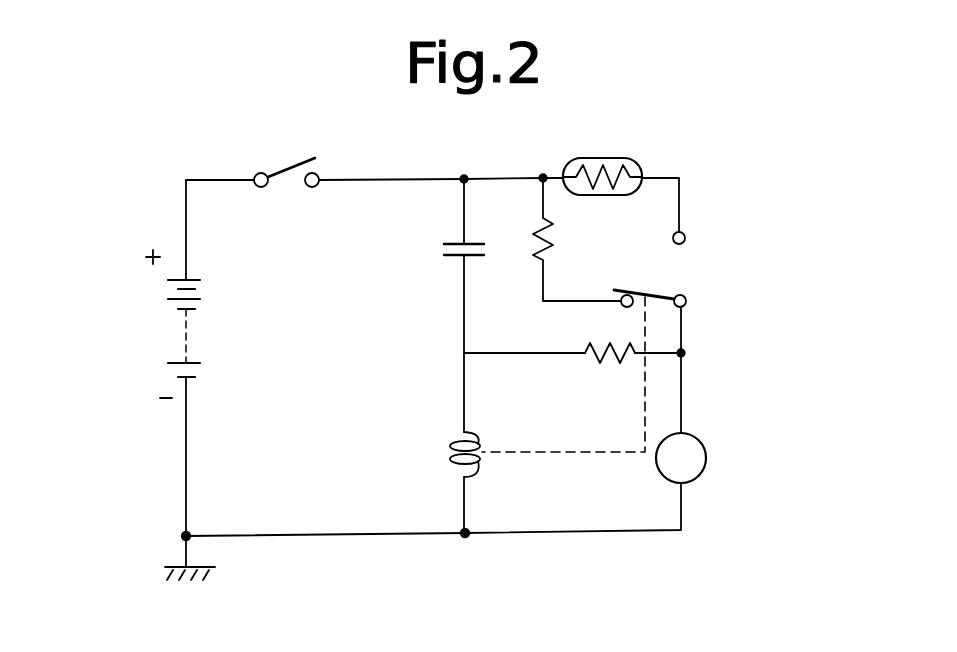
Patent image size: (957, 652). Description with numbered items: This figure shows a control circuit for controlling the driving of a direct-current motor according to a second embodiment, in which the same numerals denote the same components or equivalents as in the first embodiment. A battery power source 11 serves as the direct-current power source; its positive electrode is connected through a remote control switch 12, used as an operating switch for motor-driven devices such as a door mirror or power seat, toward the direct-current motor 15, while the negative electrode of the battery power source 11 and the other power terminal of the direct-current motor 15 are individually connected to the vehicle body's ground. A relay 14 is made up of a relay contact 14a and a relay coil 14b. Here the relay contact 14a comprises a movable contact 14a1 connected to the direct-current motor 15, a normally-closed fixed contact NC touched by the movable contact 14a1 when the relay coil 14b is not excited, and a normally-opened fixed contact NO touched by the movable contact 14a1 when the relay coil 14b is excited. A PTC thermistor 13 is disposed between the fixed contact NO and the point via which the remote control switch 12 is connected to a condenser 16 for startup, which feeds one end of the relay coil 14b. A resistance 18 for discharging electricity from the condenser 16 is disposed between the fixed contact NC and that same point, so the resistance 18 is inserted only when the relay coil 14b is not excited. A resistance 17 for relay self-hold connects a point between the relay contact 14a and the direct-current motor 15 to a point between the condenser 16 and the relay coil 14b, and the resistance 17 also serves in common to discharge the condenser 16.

The battery power source 11 is at (176, 340).
The remote control switch 12 is at (289, 165).
The PTC thermistor 13 is at (593, 158).
The relay 14 is at (577, 453).
The relay contact 14a is at (680, 263).
The movable contact 14a1 is at (660, 293).
The relay coil 14b is at (452, 458).
The direct-current motor 15 is at (706, 456).
The condenser 16 is at (443, 255).
The resistance 17 is at (598, 360).
The resistance 18 is at (530, 254).